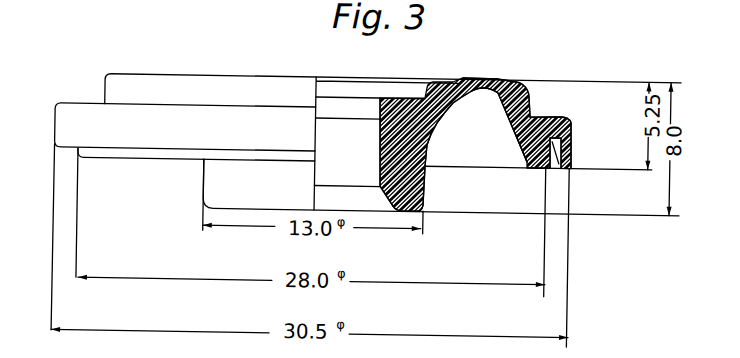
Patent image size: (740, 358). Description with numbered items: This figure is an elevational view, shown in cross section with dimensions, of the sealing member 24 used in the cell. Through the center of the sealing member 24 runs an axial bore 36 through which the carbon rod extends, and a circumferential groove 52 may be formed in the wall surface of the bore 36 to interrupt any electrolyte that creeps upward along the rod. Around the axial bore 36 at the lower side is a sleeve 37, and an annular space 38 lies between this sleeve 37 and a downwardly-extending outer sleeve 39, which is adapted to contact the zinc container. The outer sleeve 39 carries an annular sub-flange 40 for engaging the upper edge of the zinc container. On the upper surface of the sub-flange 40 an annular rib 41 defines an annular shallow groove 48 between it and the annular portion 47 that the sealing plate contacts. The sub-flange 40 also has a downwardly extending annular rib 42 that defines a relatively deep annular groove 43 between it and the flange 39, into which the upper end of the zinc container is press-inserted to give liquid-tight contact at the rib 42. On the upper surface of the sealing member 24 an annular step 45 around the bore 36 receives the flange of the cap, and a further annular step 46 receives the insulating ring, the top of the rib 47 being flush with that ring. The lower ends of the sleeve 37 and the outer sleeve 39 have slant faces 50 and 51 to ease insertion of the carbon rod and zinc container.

The sealing member 24 is at (200, 74).
The axial bore 36 is at (371, 213).
The sleeve 37 is at (422, 205).
The annular space 38 is at (468, 145).
The outer sleeve 39 is at (541, 154).
The annular sub-flange 40 is at (570, 117).
The annular rib 41 is at (560, 115).
The annular rib 42 is at (573, 147).
The annular groove 43 is at (558, 143).
The annular step 45 is at (405, 92).
The annular step 46 is at (445, 77).
The annular rib 47 is at (502, 79).
The annular shallow groove 48 is at (542, 112).
The slant face 50 is at (394, 208).
The slant face 51 is at (548, 157).
The circumferential groove 52 is at (330, 118).